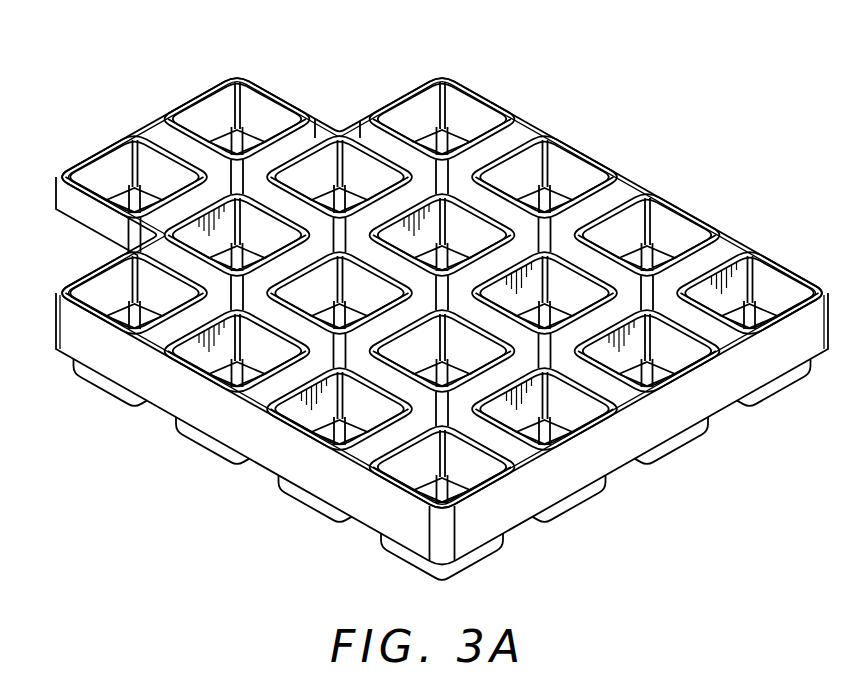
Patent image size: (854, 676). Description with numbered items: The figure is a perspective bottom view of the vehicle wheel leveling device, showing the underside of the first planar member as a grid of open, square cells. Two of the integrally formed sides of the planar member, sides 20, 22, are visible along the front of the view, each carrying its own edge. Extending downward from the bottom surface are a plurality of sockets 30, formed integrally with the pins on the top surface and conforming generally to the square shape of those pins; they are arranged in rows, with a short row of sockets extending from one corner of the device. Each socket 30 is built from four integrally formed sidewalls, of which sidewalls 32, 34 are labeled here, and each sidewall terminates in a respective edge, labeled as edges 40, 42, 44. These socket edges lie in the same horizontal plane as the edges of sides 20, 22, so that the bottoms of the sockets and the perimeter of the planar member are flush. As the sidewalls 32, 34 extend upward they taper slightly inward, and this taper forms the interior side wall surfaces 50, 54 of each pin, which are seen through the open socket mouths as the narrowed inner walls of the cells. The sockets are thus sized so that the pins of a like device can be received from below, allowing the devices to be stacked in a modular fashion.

The side 20 is at (243, 430).
The side 22 is at (643, 427).
The socket 30 is at (734, 307).
The sidewall 32 is at (582, 178).
The sidewall 34 is at (514, 171).
The edge 40 is at (611, 172).
The edge 42 is at (406, 103).
The edge 44 is at (478, 142).
The interior side wall surface 50 is at (428, 488).
The interior side wall surface 54 is at (463, 488).